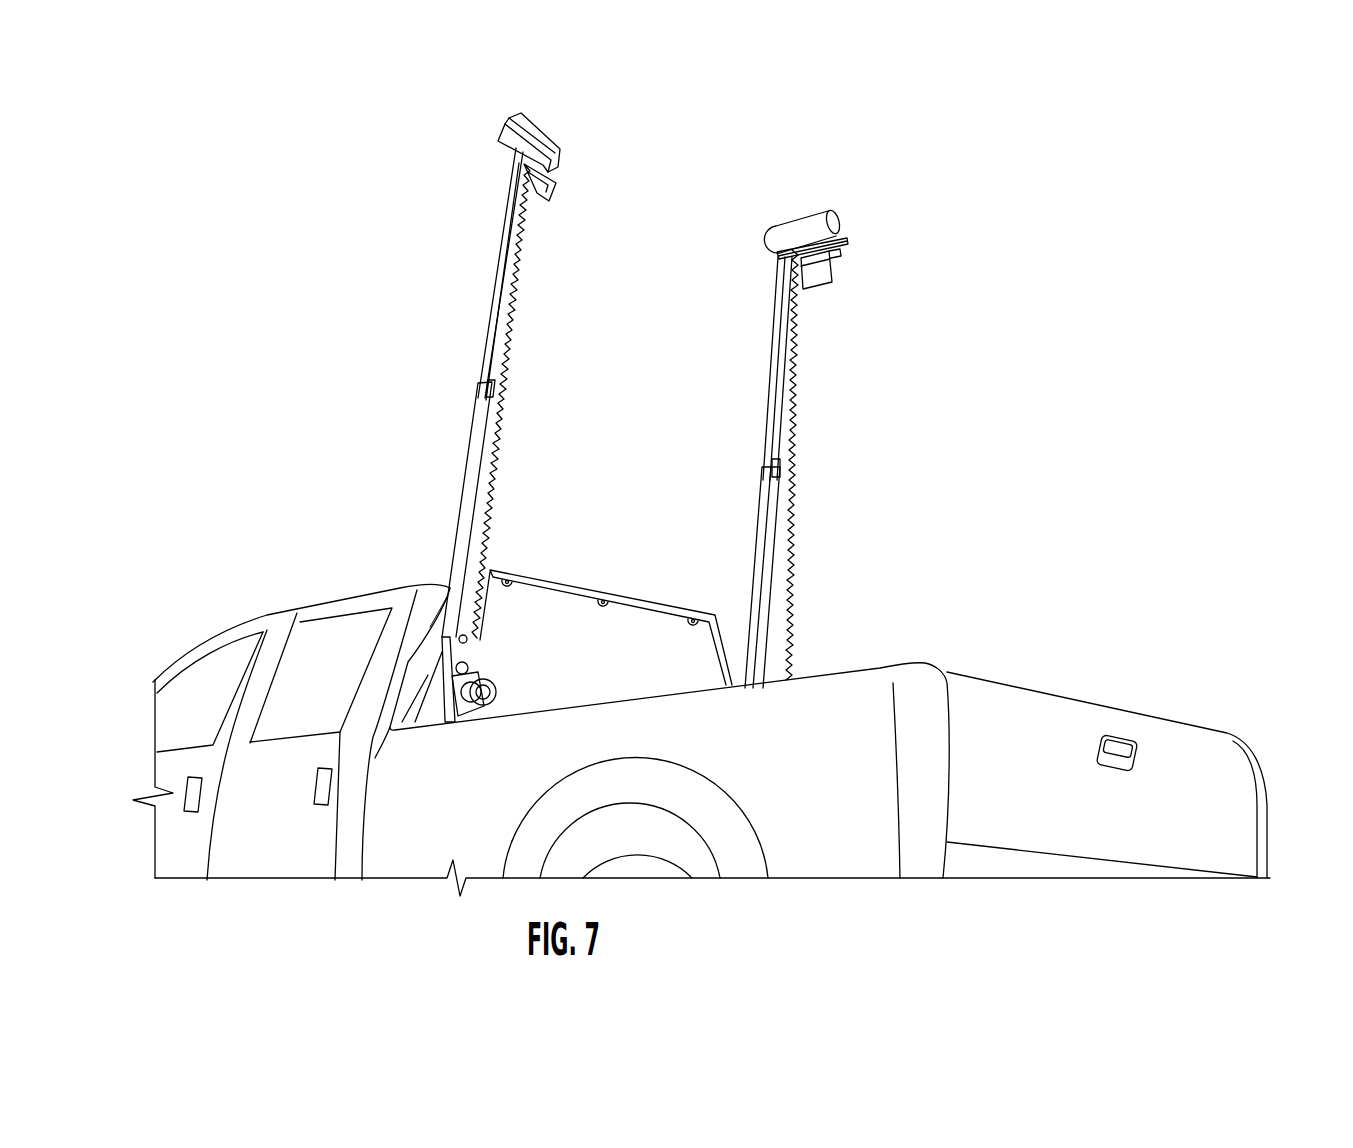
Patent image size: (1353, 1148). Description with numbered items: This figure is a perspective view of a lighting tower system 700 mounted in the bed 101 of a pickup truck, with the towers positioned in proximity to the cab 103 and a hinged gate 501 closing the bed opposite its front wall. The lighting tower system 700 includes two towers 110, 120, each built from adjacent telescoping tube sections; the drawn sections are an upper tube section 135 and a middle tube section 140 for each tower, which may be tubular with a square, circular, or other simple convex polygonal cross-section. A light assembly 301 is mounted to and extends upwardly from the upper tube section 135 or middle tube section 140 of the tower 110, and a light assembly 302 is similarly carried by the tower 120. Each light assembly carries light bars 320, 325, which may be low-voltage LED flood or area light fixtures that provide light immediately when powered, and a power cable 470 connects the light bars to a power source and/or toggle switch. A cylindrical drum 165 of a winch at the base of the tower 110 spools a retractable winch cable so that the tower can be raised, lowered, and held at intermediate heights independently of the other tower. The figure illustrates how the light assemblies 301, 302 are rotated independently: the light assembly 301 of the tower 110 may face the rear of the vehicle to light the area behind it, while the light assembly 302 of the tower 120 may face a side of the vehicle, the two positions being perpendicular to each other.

The bed 101 is at (823, 761).
The cab 103 is at (263, 613).
The hinged gate 501 is at (1043, 796).
The lighting tower system 700 is at (911, 137).
The light assembly 301 is at (645, 80).
The light assembly 302 is at (895, 232).
The tower 110 is at (468, 351).
The tower 120 is at (752, 409).
The upper tube section 135 is at (500, 253).
The middle tube section 140 is at (470, 487).
The power cable 470 is at (505, 360).
The cylindrical drum 165 is at (487, 685).
The light bar 320 is at (537, 131).
The light bar 325 is at (540, 200).